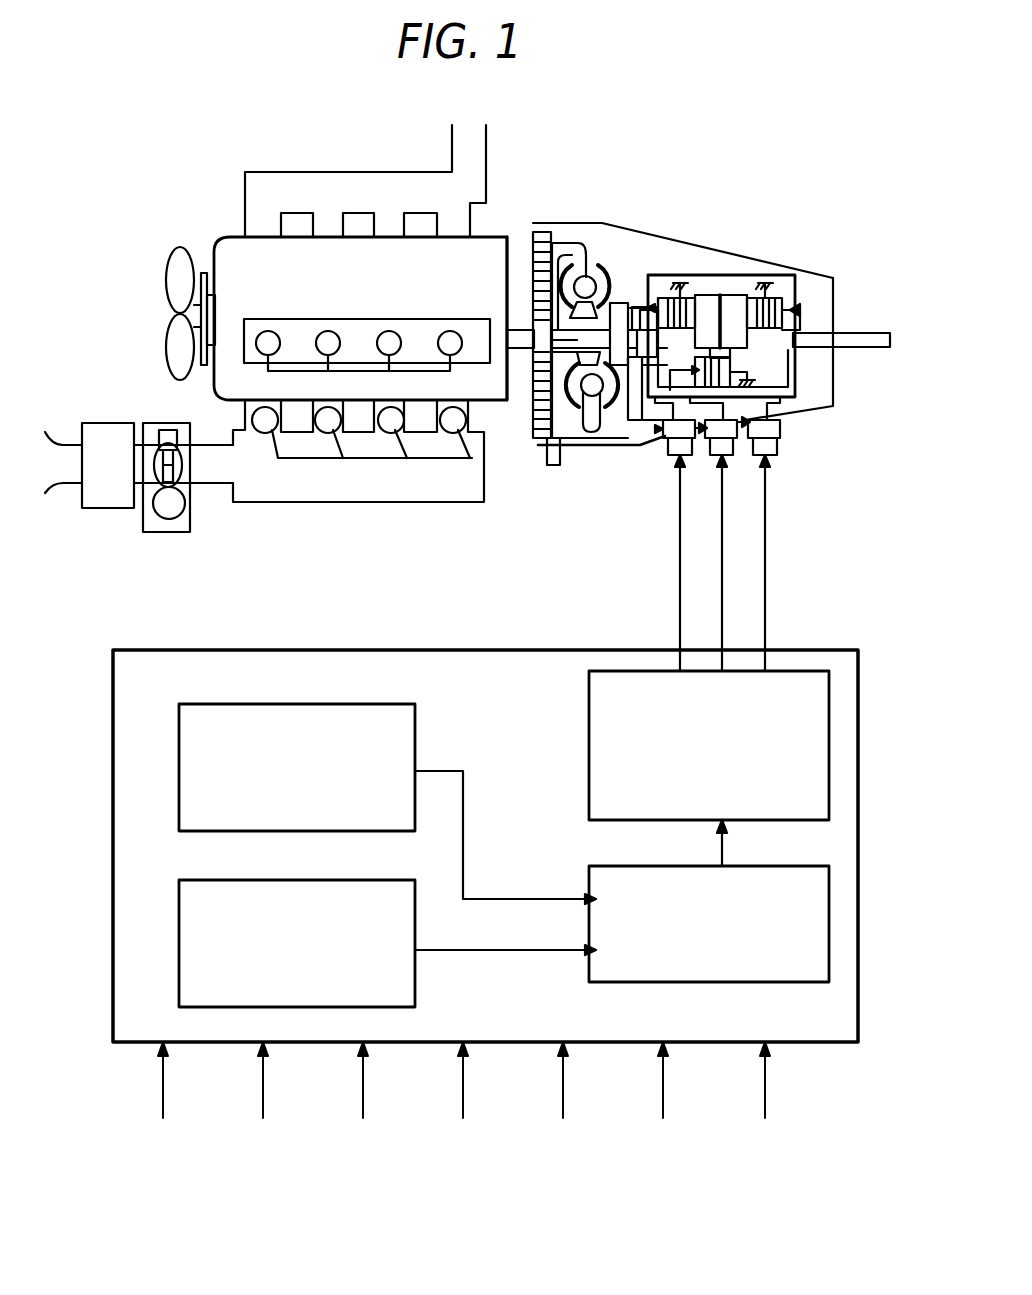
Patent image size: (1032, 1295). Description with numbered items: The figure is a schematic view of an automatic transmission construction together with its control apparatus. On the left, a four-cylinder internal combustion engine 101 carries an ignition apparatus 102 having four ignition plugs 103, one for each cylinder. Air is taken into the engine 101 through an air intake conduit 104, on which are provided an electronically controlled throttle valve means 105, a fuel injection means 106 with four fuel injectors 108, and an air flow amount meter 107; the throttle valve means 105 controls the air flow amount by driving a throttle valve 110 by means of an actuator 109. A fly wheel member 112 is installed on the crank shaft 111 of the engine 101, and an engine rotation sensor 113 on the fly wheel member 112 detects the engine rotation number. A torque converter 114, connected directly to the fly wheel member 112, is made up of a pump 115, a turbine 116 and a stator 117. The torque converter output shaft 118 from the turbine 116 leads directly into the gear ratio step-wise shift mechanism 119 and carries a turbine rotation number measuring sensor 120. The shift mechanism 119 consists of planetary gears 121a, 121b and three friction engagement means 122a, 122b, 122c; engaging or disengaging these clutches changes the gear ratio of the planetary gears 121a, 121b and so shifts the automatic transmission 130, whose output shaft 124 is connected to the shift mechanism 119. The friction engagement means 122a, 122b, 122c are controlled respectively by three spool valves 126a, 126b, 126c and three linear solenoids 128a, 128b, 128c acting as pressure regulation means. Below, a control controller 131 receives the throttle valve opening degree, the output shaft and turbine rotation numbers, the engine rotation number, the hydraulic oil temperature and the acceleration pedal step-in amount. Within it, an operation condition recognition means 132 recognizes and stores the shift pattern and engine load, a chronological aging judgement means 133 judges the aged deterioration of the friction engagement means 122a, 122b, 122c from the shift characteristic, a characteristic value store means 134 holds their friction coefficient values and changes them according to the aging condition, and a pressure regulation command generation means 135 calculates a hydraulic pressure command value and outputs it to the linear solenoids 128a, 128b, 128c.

The internal combustion engine 101 is at (236, 233).
The ignition apparatus 102 is at (414, 372).
The ignition plugs 103 is at (262, 338).
The air intake conduit 104 is at (310, 478).
The electronically controlled throttle valve means 105 is at (152, 423).
The fuel injection means 106 is at (410, 504).
The air flow amount meter 107 is at (108, 430).
The fuel injectors 108 is at (466, 418).
The actuator 109 is at (160, 518).
The throttle valve 110 is at (183, 470).
The crank shaft 111 is at (523, 325).
The fly wheel member 112 is at (545, 232).
The engine rotation sensor 113 is at (548, 468).
The torque converter 114 is at (585, 270).
The pump 115 is at (604, 398).
The turbine 116 is at (581, 408).
The stator 117 is at (604, 404).
The torque converter output shaft 118 is at (601, 328).
The shift mechanism 119 is at (694, 272).
The turbine rotation number measuring sensor 120 is at (628, 306).
The planetary gear 121a is at (745, 296).
The planetary gear 121b is at (712, 295).
The friction engagement means 122a is at (775, 297).
The friction engagement means 122b is at (742, 363).
The friction engagement means 122c is at (665, 297).
The output shaft 124 is at (866, 336).
The spool valve 126a is at (781, 430).
The spool valve 126b is at (738, 436).
The spool valve 126c is at (668, 450).
The linear solenoid 128a is at (773, 460).
The linear solenoid 128b is at (735, 456).
The linear solenoid 128c is at (697, 460).
The automatic transmission 130 is at (818, 374).
The control controller 131 is at (508, 656).
The operation condition recognition means 132 is at (179, 753).
The chronological aging judgement means 133 is at (179, 942).
The characteristic value store means 134 is at (829, 912).
The pressure regulation command generation means 135 is at (822, 736).